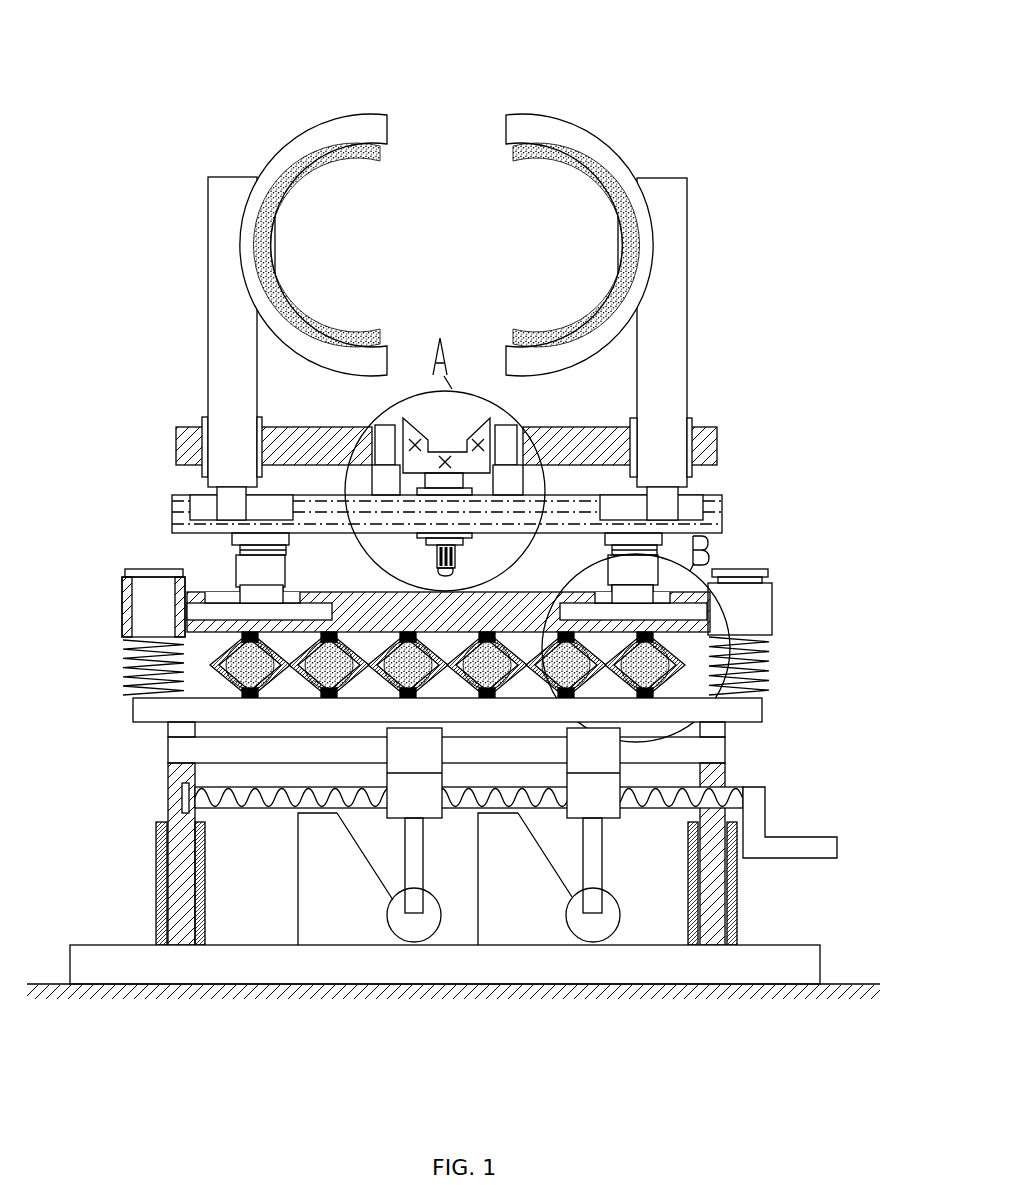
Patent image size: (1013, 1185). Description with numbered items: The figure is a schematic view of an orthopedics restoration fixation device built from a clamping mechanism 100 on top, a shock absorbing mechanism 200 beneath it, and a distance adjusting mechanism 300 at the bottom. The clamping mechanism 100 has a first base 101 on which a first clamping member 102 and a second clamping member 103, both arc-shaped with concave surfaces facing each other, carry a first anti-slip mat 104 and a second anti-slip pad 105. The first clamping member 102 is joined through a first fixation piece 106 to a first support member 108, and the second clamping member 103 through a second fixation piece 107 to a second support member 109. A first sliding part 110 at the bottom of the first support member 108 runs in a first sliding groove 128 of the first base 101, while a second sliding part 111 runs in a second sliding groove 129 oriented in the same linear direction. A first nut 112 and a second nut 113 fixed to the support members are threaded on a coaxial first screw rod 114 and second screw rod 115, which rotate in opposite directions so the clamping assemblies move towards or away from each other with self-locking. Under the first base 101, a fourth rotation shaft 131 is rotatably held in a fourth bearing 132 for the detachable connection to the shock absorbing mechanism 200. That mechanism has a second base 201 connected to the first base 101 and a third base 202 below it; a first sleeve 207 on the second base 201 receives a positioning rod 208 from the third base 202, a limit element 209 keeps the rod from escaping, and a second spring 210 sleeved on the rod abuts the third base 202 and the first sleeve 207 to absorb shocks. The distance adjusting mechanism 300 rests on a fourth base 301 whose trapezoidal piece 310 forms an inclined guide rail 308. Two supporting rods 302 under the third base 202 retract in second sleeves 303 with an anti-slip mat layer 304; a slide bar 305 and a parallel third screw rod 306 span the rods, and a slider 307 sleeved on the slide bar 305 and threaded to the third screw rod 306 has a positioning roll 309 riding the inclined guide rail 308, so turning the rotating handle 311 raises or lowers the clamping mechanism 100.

The clamping mechanism 100 is at (580, 97).
The first base 101 is at (198, 525).
The first clamping member 102 is at (297, 196).
The second clamping member 103 is at (588, 180).
The first anti-slip mat 104 is at (365, 160).
The second anti-slip pad 105 is at (562, 167).
The first fixation piece 106 is at (266, 235).
The second fixation piece 107 is at (627, 227).
The first support member 108 is at (237, 305).
The second support member 109 is at (662, 263).
The first sliding part 110 is at (224, 502).
The second sliding part 111 is at (657, 508).
The first nut 112 is at (203, 417).
The second nut 113 is at (613, 512).
The first screw rod 114 is at (258, 419).
The second screw rod 115 is at (592, 442).
The first sliding groove 128 is at (203, 509).
The second sliding groove 129 is at (688, 433).
The fourth rotation shaft 131 is at (652, 547).
The fourth bearing 132 is at (657, 535).
The shock absorbing mechanism 200 is at (200, 655).
The second base 201 is at (203, 602).
The third base 202 is at (750, 713).
The first sleeve 207 is at (122, 608).
The positioning rod 208 is at (141, 630).
The limit element 209 is at (742, 572).
The second spring 210 is at (762, 673).
The distance adjusting mechanism 300 is at (679, 785).
The fourth base 301 is at (790, 968).
The supporting rod 302 is at (182, 875).
The second sleeve 303 is at (202, 932).
The anti-slip mat layer 304 is at (697, 937).
The slide bar 305 is at (183, 750).
The third screw rod 306 is at (200, 797).
The slider 307 is at (403, 750).
The inclined guide rail 308 is at (363, 855).
The positioning roll 309 is at (590, 928).
The trapezoidal piece 310 is at (350, 916).
The rotating handle 311 is at (760, 847).